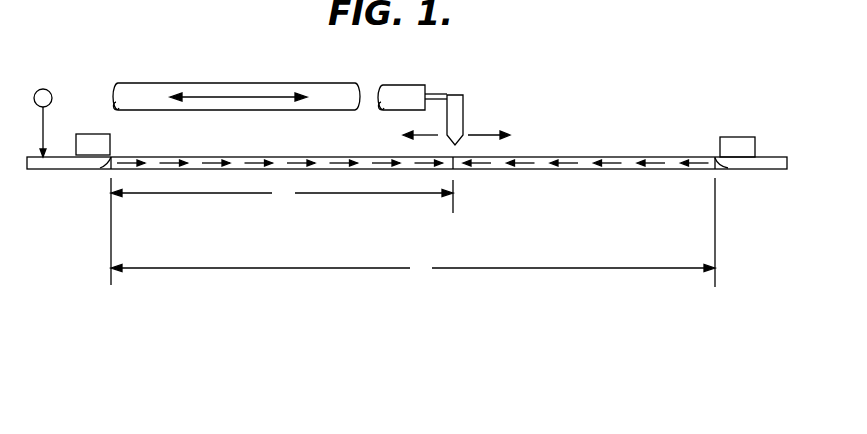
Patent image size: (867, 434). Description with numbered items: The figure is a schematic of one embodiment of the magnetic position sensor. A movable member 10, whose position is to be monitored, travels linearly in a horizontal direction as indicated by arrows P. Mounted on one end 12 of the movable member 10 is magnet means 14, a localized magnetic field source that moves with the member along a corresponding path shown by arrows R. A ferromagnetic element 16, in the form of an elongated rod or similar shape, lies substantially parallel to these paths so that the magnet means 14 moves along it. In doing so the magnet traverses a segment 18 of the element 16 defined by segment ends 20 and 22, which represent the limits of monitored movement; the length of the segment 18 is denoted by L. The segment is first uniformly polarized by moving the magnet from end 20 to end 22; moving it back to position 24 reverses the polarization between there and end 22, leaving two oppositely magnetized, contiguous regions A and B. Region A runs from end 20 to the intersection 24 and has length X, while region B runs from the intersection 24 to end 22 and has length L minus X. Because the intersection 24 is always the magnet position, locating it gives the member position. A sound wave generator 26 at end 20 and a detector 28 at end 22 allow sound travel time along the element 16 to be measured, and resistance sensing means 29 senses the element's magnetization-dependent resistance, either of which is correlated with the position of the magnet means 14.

The movable member 10 is at (222, 83).
The end of member 12 is at (400, 93).
The magnet means 14 is at (461, 100).
The ferromagnetic element 16 is at (776, 170).
The segment 18 is at (222, 157).
The segment end 20 is at (111, 162).
The segment end 22 is at (716, 167).
The intersection 24 is at (455, 158).
The sound wave generator 26 is at (108, 145).
The detector 28 is at (760, 146).
The resistance sensing means 29 is at (48, 90).
The arrows P is at (246, 96).
The arrows R is at (432, 133).
The region A is at (313, 157).
The region B is at (590, 157).
The length of region A X is at (282, 231).
The length of segment L is at (413, 232).